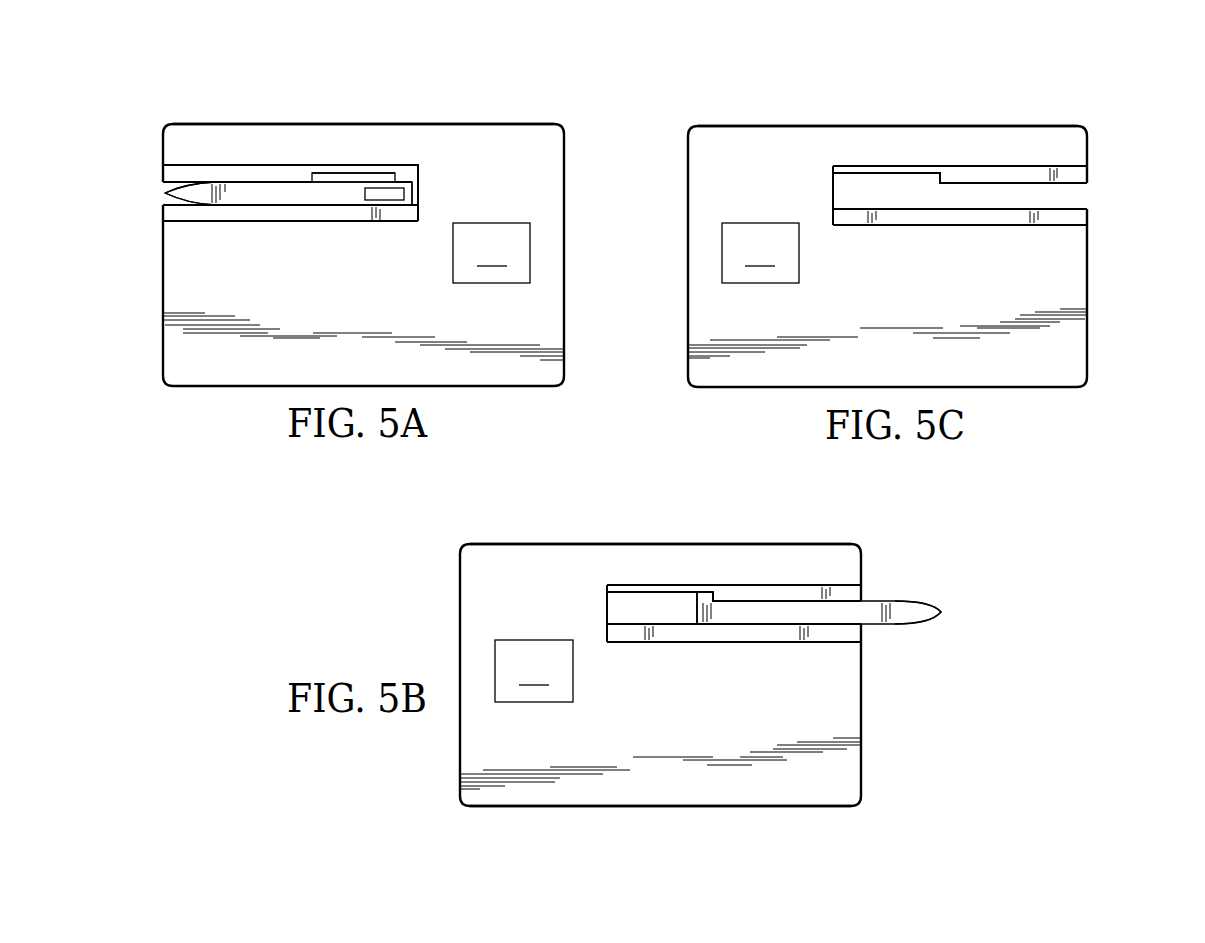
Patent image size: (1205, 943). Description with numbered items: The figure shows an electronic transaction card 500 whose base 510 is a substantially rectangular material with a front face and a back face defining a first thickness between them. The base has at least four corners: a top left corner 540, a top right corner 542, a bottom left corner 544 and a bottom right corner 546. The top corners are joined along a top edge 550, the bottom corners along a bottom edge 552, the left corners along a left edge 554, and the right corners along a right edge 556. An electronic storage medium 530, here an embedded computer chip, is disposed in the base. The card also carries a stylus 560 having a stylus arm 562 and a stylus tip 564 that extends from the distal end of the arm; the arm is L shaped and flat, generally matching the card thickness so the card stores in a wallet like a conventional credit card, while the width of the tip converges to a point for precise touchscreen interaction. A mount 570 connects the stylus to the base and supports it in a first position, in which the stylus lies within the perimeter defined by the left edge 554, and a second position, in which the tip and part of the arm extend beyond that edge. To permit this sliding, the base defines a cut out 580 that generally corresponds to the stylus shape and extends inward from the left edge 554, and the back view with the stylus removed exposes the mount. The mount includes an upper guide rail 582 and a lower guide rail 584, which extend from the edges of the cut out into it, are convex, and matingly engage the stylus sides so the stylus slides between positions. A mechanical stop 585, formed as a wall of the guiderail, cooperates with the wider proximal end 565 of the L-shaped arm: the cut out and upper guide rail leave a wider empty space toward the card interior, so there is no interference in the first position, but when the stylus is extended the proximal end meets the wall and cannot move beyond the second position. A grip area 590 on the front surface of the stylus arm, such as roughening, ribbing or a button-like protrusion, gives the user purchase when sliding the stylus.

In FIG. 5A, the electronic transaction card 500 is at (237, 473).
In FIG. 5C, the electronic transaction card 500 is at (1086, 499).
In FIG. 5B, the electronic transaction card 500 is at (361, 583).
In FIG. 5A, the base 510 is at (233, 368).
In FIG. 5C, the base 510 is at (887, 333).
In FIG. 5B, the base 510 is at (660, 763).
In FIG. 5A, the electronic storage medium 530 is at (491, 253).
In FIG. 5C, the electronic storage medium 530 is at (760, 253).
In FIG. 5B, the electronic storage medium 530 is at (534, 671).
In FIG. 5A, the top left corner 540 is at (163, 126).
In FIG. 5C, the top left corner 540 is at (1088, 128).
In FIG. 5A, the top right corner 542 is at (563, 124).
In FIG. 5C, the top right corner 542 is at (690, 127).
In FIG. 5A, the bottom left corner 544 is at (165, 387).
In FIG. 5C, the bottom left corner 544 is at (1088, 386).
In FIG. 5A, the bottom right corner 546 is at (566, 388).
In FIG. 5C, the bottom right corner 546 is at (688, 388).
In FIG. 5A, the top side or edge 550 is at (490, 124).
In FIG. 5C, the top side or edge 550 is at (1005, 126).
In FIG. 5B, the top side or edge 550 is at (683, 544).
In FIG. 5A, the bottom side or edge 552 is at (443, 386).
In FIG. 5C, the bottom side or edge 552 is at (1037, 388).
In FIG. 5B, the bottom side or edge 552 is at (795, 806).
In FIG. 5A, the left side or edge 554 is at (163, 356).
In FIG. 5C, the left side or edge 554 is at (1088, 293).
In FIG. 5A, the right side or edge 556 is at (564, 342).
In FIG. 5C, the right side or edge 556 is at (688, 250).
In FIG. 5A, the stylus 560 is at (281, 193).
In FIG. 5A, the stylus arm 562 is at (238, 198).
In FIG. 5B, the stylus arm 562 is at (835, 612).
In FIG. 5A, the stylus tip 564 is at (165, 193).
In FIG. 5B, the stylus tip 564 is at (910, 608).
In FIG. 5A, the wider proximal end 565 is at (420, 191).
In FIG. 5B, the wider proximal end 565 is at (703, 617).
In FIG. 5A, the mount 570 is at (302, 166).
In FIG. 5C, the cut out 580 is at (978, 195).
In FIG. 5B, the cut out 580 is at (641, 600).
In FIG. 5A, the upper guide rail 582 is at (171, 175).
In FIG. 5C, the upper guide rail 582 is at (1080, 175).
In FIG. 5B, the upper guide rail 582 is at (790, 590).
In FIG. 5A, the lower guide rail 584 is at (170, 215).
In FIG. 5C, the lower guide rail 584 is at (1088, 212).
In FIG. 5B, the lower guide rail 584 is at (830, 637).
In FIG. 5A, the mechanical stop 585 is at (313, 177).
In FIG. 5C, the mechanical stop 585 is at (920, 170).
In FIG. 5B, the mechanical stop 585 is at (715, 598).
In FIG. 5A, the grip area 590 is at (380, 196).